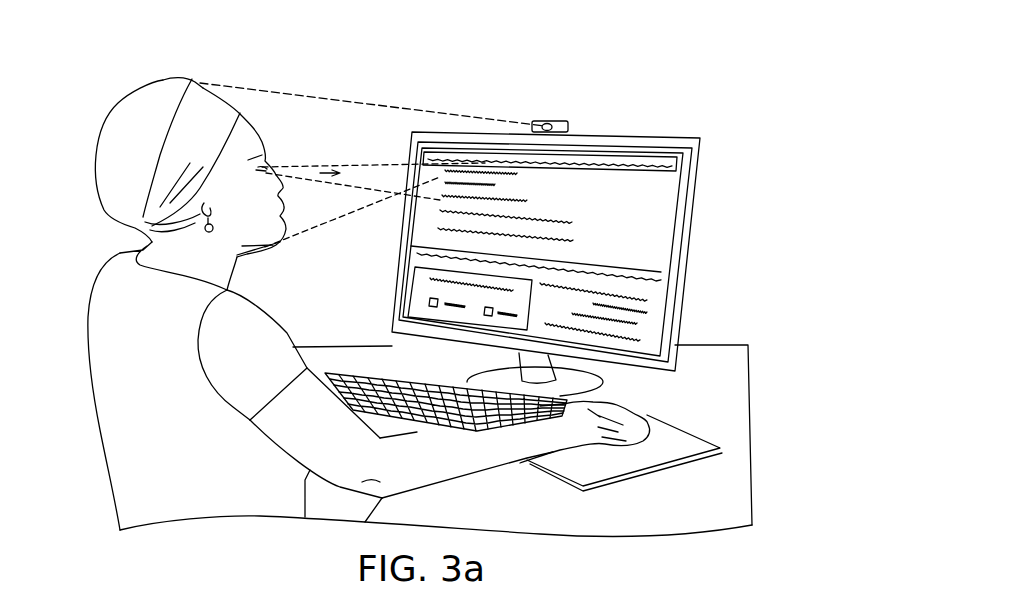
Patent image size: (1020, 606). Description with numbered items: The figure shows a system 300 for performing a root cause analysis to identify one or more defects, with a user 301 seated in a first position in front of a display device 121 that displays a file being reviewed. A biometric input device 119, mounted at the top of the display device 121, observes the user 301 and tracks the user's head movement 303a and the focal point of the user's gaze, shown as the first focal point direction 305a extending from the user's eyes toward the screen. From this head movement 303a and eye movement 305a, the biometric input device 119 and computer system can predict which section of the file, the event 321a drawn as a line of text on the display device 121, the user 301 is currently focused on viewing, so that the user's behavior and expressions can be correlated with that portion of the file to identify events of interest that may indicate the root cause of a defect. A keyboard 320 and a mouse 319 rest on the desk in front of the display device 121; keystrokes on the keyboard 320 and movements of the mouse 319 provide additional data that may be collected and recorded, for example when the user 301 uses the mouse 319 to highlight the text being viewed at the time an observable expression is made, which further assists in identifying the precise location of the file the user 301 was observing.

The system 300 is at (617, 50).
The user 301 is at (148, 107).
The head movement 303a is at (348, 102).
The first focal point direction 305a is at (353, 167).
The biometric input device 119 is at (566, 124).
The display device 121 is at (665, 145).
The event of the file 321a is at (523, 200).
The keyboard 320 is at (358, 372).
The mouse 319 is at (643, 422).